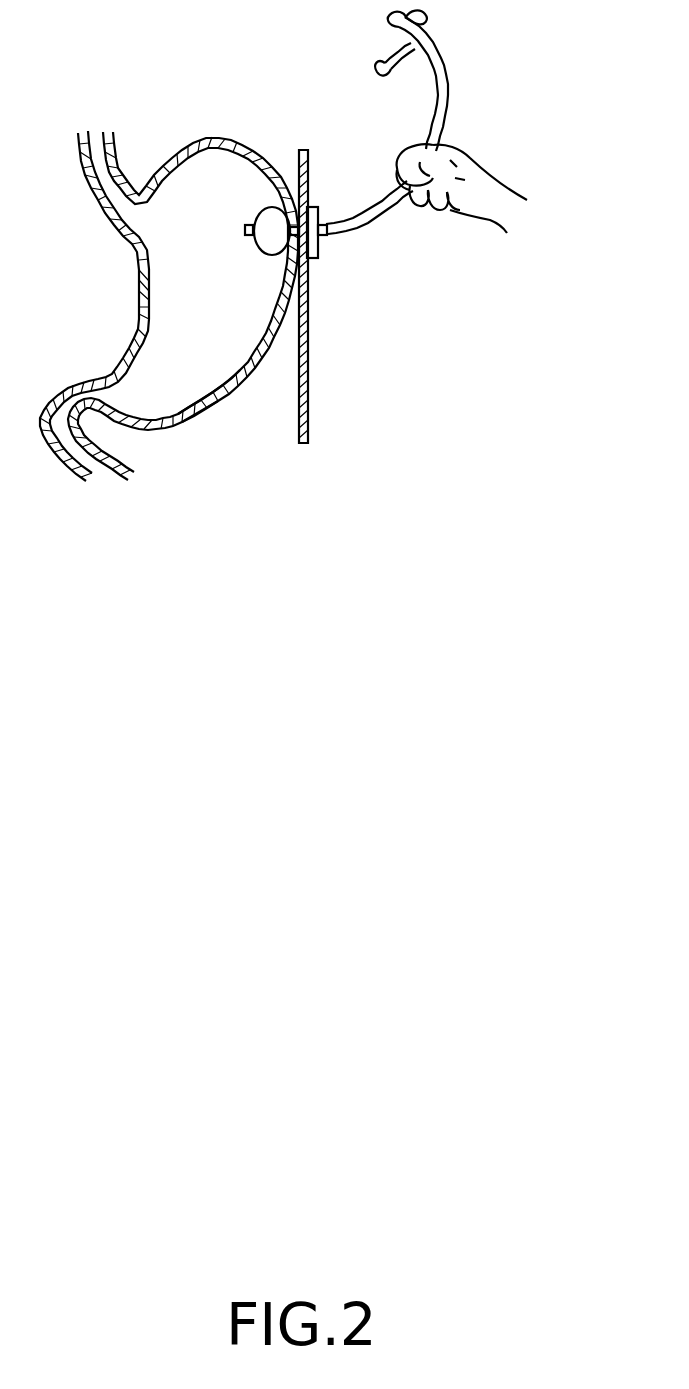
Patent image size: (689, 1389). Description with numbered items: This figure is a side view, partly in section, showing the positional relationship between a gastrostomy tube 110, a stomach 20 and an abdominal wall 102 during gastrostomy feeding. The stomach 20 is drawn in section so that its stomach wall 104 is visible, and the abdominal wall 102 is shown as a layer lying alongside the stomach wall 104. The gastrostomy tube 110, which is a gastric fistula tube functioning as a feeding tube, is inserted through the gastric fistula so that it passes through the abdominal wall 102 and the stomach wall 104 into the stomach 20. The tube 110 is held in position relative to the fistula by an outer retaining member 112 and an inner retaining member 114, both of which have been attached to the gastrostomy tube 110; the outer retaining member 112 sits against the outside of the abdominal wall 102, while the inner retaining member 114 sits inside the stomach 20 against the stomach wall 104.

The stomach 20 is at (195, 162).
The abdominal wall 102 is at (310, 415).
The stomach wall 104 is at (223, 407).
The gastrostomy tube 110 is at (472, 94).
The outer retaining member 112 is at (323, 247).
The inner retaining member 114 is at (270, 228).